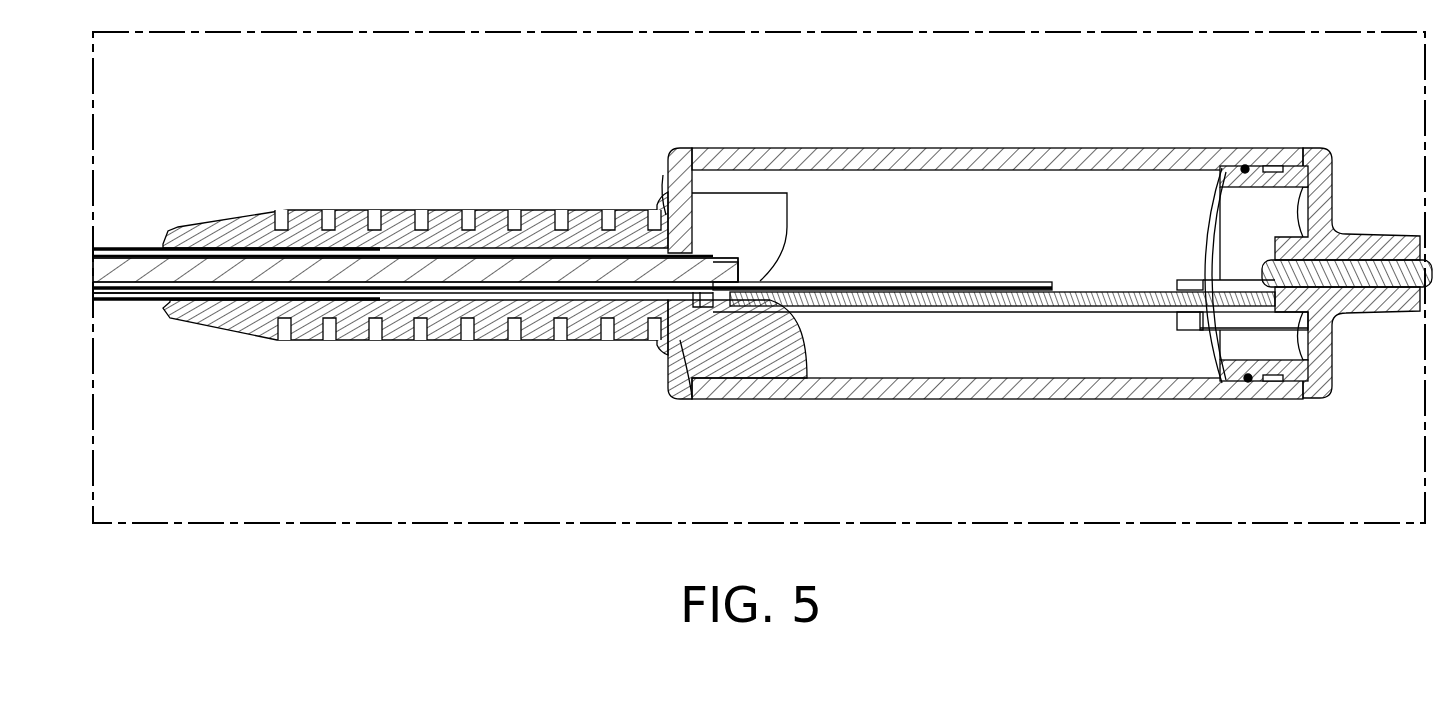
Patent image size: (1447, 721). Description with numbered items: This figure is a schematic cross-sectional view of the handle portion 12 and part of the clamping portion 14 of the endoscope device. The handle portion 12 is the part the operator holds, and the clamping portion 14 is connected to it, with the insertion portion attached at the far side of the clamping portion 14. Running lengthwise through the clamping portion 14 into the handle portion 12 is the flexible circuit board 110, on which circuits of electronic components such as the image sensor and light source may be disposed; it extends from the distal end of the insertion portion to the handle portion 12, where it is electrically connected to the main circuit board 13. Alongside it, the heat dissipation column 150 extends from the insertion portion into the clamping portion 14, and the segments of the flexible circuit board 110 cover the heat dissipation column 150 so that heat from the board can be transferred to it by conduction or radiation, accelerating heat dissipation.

The handle portion 12 is at (991, 136).
The main circuit board 13 is at (1085, 298).
The clamping portion 14 is at (483, 196).
The flexible circuit board 110 is at (448, 294).
The heat dissipation column 150 is at (428, 272).